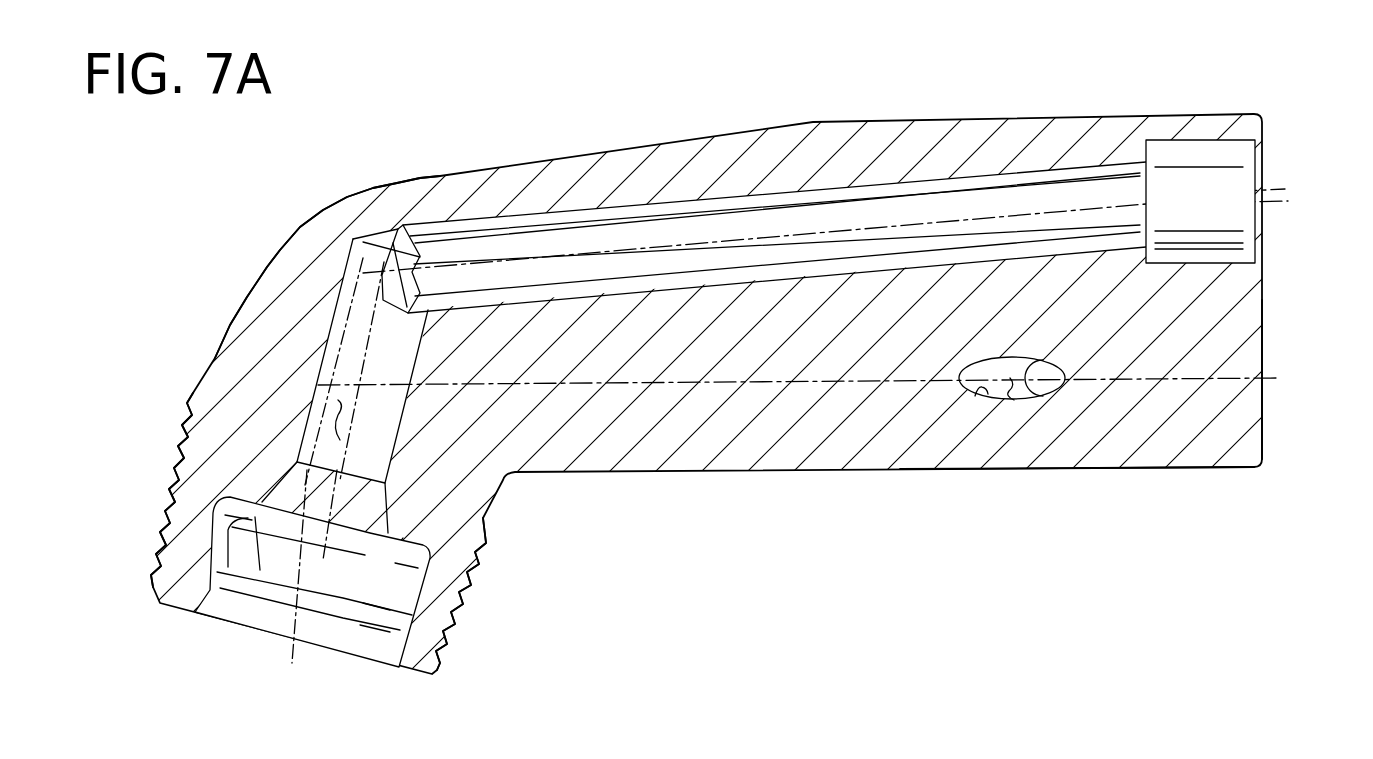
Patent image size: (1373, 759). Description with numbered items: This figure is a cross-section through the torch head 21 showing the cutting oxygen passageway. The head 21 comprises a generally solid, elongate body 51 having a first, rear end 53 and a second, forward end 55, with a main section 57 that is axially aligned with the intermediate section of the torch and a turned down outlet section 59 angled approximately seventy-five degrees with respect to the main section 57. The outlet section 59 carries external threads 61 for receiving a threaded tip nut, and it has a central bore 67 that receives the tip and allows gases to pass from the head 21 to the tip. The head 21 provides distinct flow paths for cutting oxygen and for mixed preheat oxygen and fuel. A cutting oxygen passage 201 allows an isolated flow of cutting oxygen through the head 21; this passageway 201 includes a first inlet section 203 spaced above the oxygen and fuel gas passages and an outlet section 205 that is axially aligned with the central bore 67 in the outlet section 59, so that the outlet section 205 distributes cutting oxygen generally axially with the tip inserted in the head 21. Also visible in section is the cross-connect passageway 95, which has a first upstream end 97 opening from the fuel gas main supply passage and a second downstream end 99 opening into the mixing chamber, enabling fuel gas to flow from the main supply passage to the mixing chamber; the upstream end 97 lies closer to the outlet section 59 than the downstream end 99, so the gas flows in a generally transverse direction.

The head 21 is at (783, 125).
The body 51 is at (1243, 122).
The first (rear) end 53 is at (1265, 433).
The second (forward) end 55 is at (228, 329).
The main section 57 is at (1148, 452).
The outlet section 59 is at (237, 410).
The external threads 61 is at (467, 581).
The central bore 67 is at (455, 637).
The cross-connect passageway 95 is at (1007, 393).
The first upstream end 97 is at (968, 403).
The second downstream end 99 is at (1047, 390).
The cutting oxygen passage 201 is at (562, 223).
The first inlet section 203 is at (903, 231).
The outlet section 205 is at (332, 425).